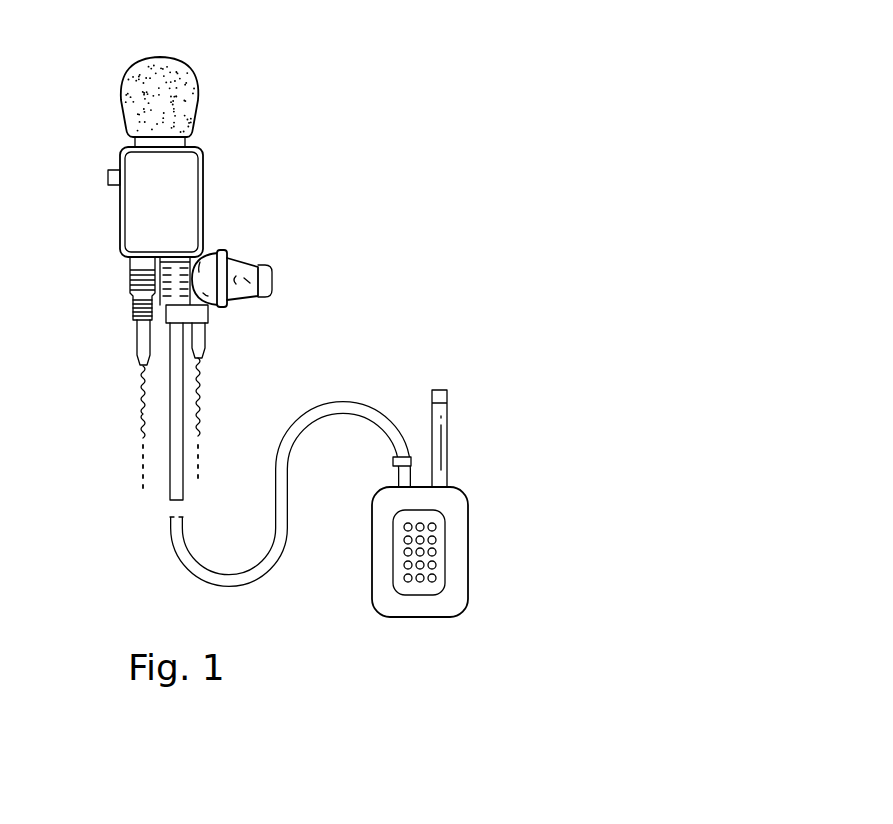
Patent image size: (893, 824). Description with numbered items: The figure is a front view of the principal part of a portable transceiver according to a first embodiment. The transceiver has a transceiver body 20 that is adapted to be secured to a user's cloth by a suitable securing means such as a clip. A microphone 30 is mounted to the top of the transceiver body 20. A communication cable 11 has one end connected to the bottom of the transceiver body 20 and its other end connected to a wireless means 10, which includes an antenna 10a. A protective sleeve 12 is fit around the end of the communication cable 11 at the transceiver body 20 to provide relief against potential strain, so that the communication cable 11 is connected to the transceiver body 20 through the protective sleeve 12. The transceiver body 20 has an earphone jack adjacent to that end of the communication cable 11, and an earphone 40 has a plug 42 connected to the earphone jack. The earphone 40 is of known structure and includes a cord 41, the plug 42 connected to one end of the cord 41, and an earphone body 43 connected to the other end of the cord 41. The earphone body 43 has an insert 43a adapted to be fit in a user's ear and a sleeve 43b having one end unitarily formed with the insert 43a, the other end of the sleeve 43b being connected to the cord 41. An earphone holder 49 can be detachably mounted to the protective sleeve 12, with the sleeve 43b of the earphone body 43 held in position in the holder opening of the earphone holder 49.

The wireless means 10 is at (470, 598).
The antenna 10a is at (441, 388).
The communication cable 11 is at (185, 490).
The protective sleeve 12 is at (183, 253).
The transceiver body 20 is at (239, 161).
The microphone 30 is at (186, 104).
The earphone 40 is at (132, 358).
The cord 41 is at (143, 400).
The plug 42 is at (132, 304).
The earphone body 43 is at (227, 253).
The insert 43a is at (273, 268).
The sleeve 43b is at (208, 326).
The earphone holder 49 is at (173, 313).